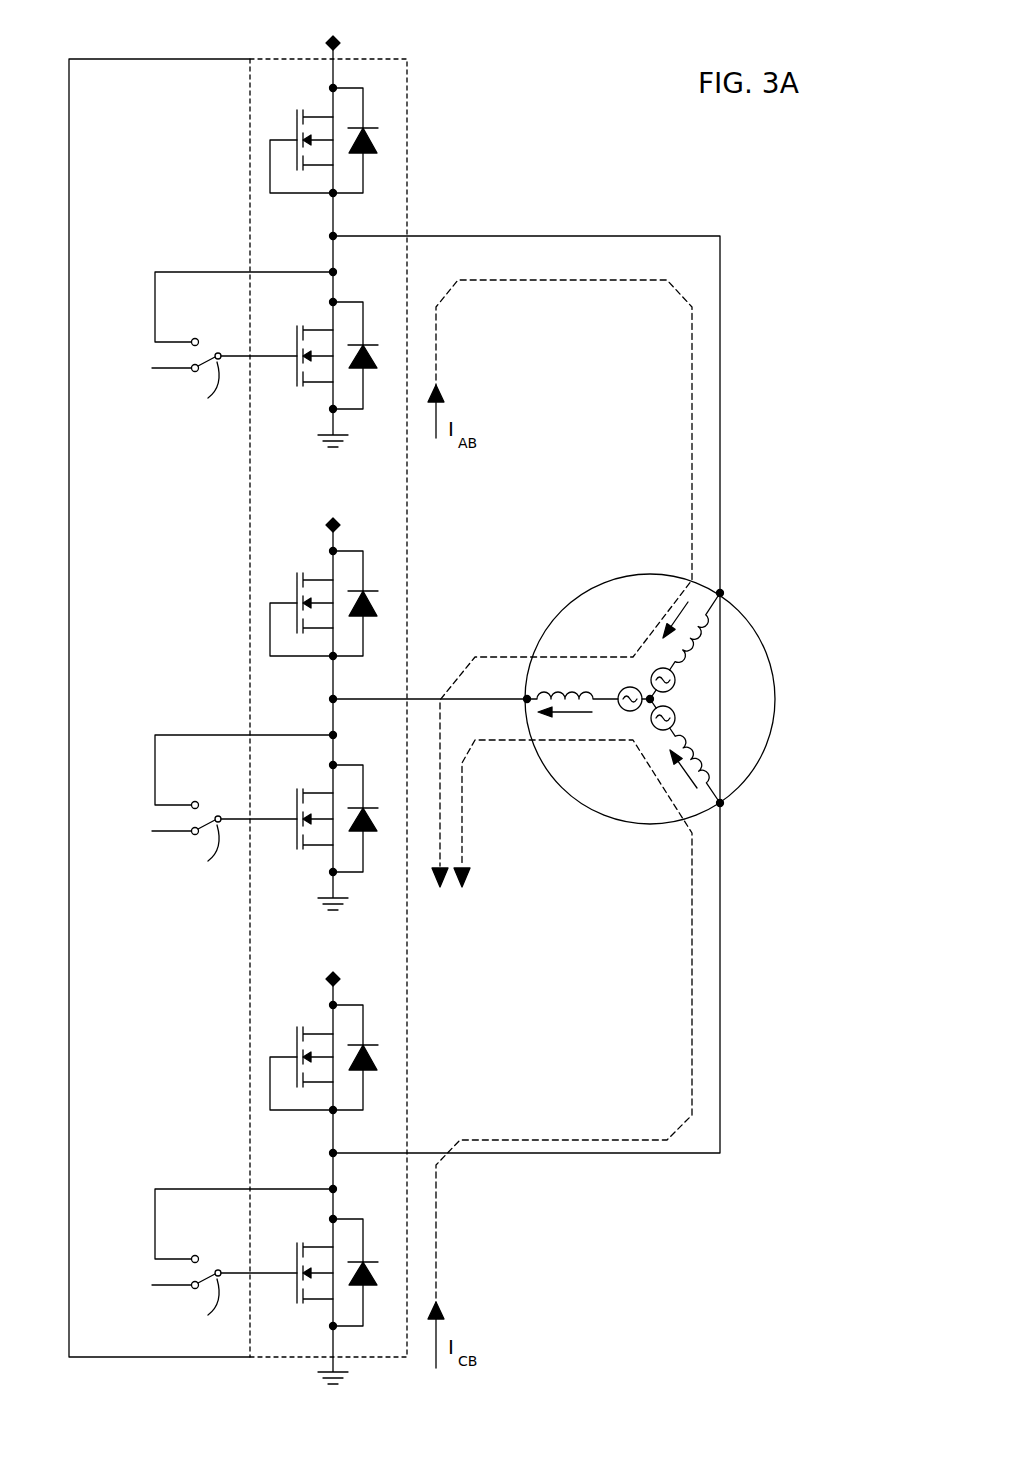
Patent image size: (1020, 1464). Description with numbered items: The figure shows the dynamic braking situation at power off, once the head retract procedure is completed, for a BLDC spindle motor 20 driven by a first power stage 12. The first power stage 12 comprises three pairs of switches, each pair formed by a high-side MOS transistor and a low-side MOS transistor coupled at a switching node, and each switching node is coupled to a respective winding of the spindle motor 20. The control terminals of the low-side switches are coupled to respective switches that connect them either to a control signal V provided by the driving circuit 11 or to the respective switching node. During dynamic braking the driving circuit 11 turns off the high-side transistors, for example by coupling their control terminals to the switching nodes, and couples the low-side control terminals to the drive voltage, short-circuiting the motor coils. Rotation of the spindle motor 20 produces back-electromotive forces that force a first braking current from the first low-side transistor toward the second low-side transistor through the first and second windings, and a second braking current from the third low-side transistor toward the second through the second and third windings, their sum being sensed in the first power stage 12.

The driving circuit 11 is at (142, 60).
The first power stage 12 is at (266, 700).
The spindle motor 20 is at (782, 700).